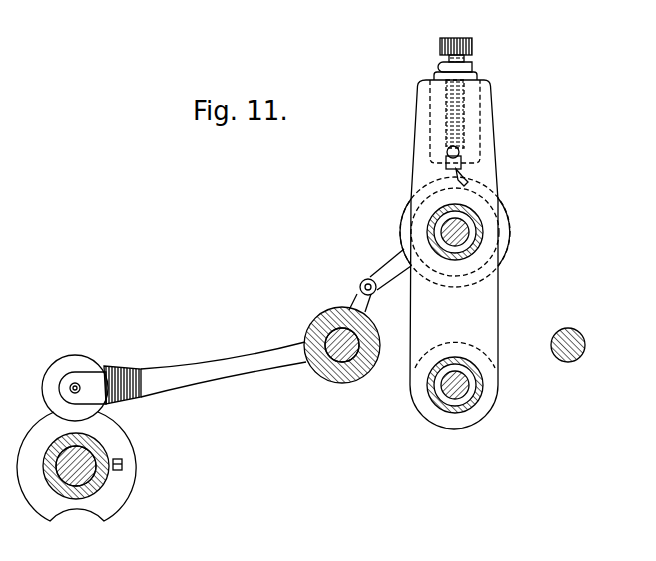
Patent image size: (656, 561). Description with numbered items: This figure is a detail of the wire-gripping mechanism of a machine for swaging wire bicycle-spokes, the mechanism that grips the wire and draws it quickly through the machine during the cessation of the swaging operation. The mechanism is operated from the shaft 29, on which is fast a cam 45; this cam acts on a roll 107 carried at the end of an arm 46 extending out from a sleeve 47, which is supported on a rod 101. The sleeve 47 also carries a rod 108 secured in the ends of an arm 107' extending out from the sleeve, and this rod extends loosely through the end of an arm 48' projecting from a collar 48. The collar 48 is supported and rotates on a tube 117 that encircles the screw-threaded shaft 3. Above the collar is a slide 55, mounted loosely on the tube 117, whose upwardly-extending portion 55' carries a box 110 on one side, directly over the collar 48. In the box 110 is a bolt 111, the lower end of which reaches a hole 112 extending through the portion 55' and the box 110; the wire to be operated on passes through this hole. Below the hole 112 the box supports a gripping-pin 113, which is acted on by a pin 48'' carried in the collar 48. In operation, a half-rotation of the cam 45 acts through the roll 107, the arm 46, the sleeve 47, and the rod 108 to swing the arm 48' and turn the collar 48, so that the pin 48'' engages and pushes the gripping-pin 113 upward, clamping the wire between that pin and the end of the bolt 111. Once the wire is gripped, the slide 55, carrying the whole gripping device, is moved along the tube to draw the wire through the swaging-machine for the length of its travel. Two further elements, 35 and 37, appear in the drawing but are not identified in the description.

The screw-threaded shaft 3 is at (470, 238).
The shaft 29 is at (102, 462).
The stud 35 is at (584, 334).
The pivot pin 37 is at (462, 392).
The cam 45 is at (125, 446).
The arm 46 is at (232, 370).
The sleeve 47 is at (343, 382).
The collar 48 is at (478, 232).
The arm 48' is at (377, 265).
The pin 48'' is at (523, 195).
The slide 55 is at (478, 250).
The upwardly-extending portion 55' is at (513, 91).
The rod 101 is at (372, 329).
The roll 107 is at (83, 376).
The arm 107' is at (319, 301).
The rod 108 is at (358, 285).
The box 110 is at (478, 142).
The bolt 111 is at (456, 37).
The hole 112 is at (461, 152).
The gripping-pin 113 is at (487, 166).
The tube 117 is at (410, 203).